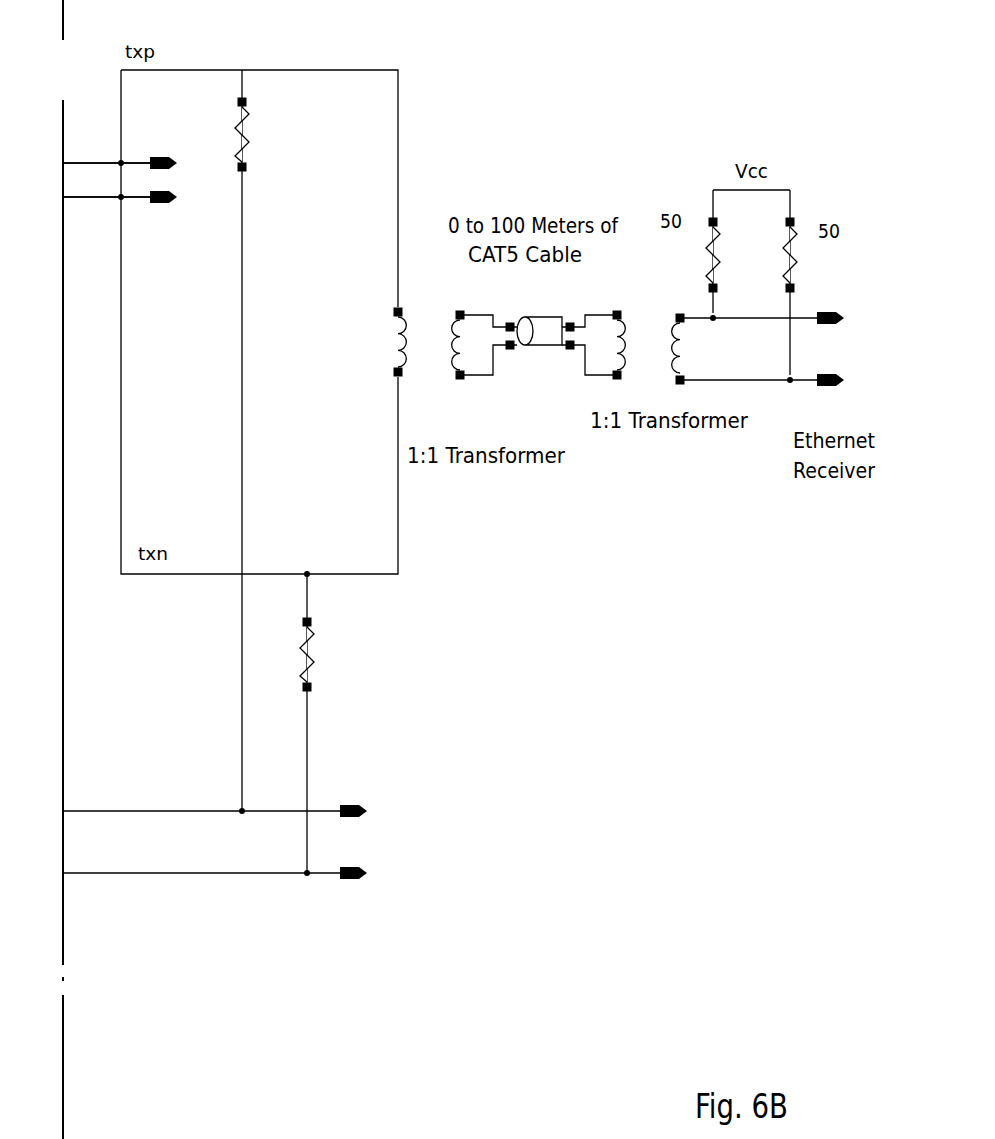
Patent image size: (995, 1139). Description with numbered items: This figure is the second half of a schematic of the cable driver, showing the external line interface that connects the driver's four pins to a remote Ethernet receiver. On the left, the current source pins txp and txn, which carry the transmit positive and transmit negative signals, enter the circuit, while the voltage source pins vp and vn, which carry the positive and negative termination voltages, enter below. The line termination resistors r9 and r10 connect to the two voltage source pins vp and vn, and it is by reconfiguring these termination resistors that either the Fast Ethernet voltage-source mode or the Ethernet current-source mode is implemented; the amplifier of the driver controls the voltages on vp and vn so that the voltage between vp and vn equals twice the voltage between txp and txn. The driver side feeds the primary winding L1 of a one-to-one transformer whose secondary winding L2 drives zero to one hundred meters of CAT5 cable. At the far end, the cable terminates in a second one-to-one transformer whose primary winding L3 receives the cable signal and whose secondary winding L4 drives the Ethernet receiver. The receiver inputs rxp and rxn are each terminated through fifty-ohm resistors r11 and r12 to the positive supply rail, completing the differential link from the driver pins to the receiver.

The termination resistor r9 is at (259, 440).
The termination resistor r10 is at (335, 723).
The termination resistor r11 is at (688, 255).
The termination resistor r12 is at (815, 255).
The transformer winding L1 is at (382, 342).
The transformer winding L2 is at (479, 345).
The transformer winding L3 is at (599, 345).
The transformer winding L4 is at (696, 349).
The current source pin txp is at (136, 163).
The current source pin txn is at (136, 196).
The voltage source pin vp is at (234, 800).
The voltage source pin vn is at (234, 863).
The receiver input rxp is at (780, 321).
The receiver input rxn is at (780, 381).